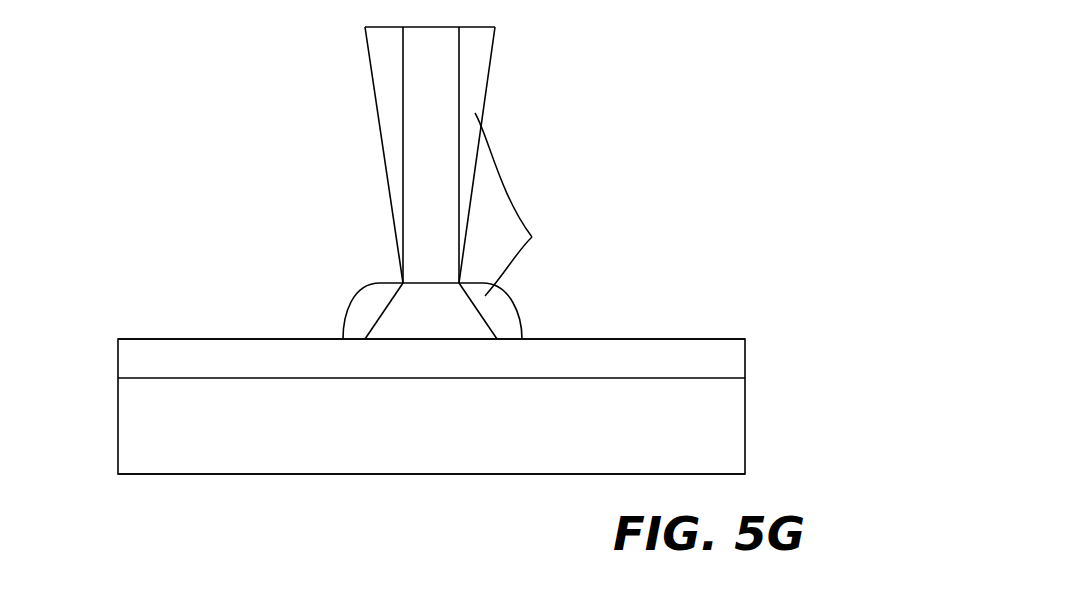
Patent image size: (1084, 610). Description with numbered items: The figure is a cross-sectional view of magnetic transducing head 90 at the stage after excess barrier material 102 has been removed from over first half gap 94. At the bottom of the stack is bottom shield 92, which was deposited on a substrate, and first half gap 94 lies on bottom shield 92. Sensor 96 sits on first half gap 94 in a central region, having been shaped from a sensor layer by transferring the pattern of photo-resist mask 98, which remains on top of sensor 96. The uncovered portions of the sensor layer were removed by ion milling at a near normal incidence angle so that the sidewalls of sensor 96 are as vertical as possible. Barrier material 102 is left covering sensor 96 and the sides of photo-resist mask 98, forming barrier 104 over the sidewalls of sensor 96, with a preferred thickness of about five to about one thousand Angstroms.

The magnetic transducing head 90 is at (105, 398).
The bottom shield 92 is at (734, 409).
The first half gap 94 is at (732, 371).
The sensor 96 is at (378, 330).
The photo-resist mask 98 is at (445, 64).
The barrier material 102 is at (392, 112).
The barrier 104 is at (368, 300).